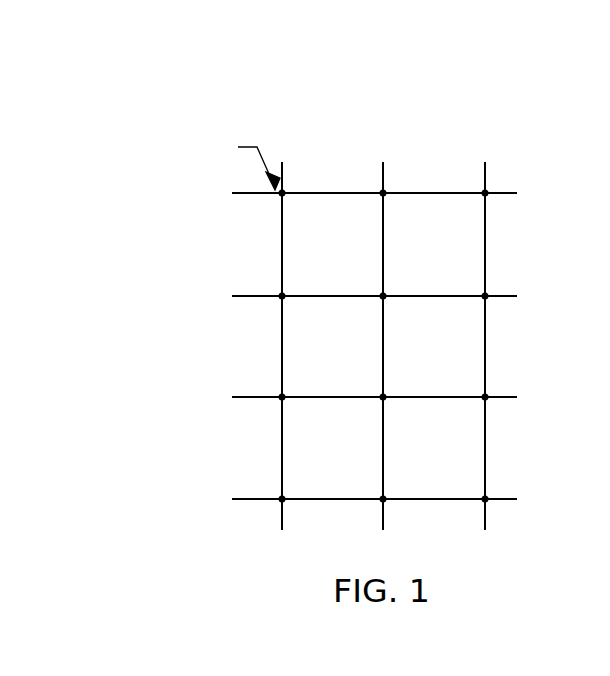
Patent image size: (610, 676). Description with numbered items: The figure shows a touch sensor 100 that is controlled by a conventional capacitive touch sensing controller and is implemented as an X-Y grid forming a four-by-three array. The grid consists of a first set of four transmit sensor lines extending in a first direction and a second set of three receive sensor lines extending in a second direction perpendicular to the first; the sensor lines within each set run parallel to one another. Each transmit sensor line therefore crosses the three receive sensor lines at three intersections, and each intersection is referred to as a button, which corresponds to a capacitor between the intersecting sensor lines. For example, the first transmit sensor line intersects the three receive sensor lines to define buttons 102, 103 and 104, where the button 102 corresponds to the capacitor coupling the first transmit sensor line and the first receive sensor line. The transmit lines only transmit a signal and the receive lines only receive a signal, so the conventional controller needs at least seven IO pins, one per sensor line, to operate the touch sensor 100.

The touch sensor 100 is at (303, 92).
The button 102 is at (288, 190).
The button 103 is at (389, 190).
The button 104 is at (491, 190).